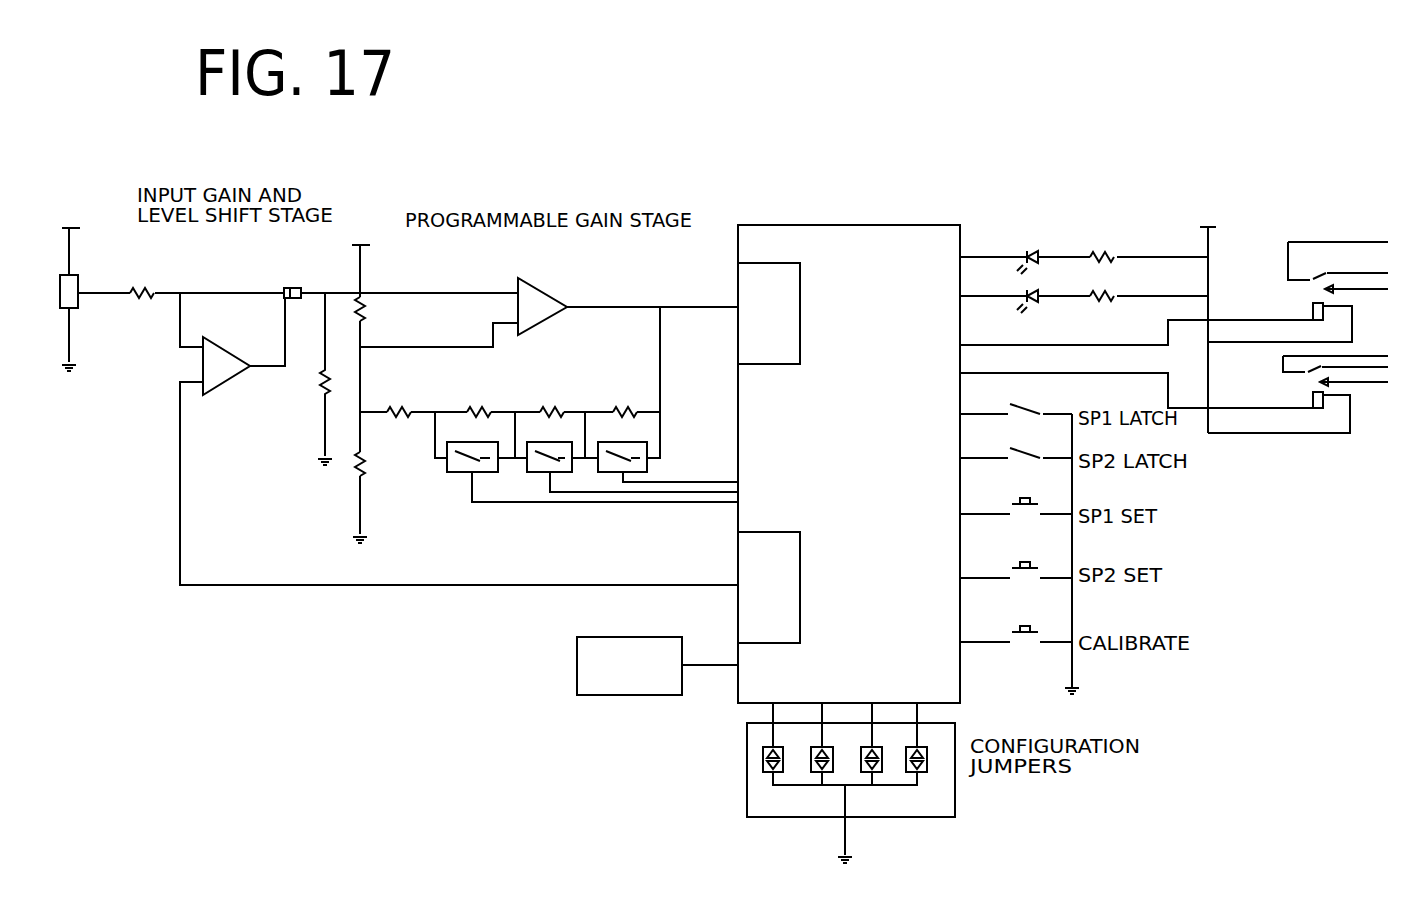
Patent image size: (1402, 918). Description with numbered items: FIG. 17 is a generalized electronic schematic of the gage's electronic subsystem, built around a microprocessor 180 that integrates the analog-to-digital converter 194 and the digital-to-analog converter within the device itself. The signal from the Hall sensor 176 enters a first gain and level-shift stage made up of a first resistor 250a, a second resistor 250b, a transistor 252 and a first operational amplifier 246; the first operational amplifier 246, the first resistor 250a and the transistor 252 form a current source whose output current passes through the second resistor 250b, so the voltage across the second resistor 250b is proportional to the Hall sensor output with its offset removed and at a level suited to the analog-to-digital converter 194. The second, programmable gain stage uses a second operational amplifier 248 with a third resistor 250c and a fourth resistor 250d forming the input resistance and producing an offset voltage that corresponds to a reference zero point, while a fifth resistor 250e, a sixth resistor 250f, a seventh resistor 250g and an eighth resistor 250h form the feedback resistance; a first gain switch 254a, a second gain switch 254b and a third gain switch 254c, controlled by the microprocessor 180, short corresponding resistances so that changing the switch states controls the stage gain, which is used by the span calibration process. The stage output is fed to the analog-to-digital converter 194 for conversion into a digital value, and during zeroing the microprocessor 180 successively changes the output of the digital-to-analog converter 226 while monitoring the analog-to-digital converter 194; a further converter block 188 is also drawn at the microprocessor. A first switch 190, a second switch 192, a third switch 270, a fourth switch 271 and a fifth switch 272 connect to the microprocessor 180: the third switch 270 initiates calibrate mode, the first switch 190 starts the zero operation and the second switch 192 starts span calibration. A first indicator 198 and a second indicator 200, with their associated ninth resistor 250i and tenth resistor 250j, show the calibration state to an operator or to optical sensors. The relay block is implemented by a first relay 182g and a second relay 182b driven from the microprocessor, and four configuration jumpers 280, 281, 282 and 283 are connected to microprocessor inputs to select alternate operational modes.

The Hall sensor 176 is at (78, 290).
The resistor R1 250a is at (150, 283).
The transistor Q1 252 is at (292, 287).
The operational amplifier A1 246 is at (203, 372).
The resistor R2 250b is at (318, 400).
The resistor R3 250c is at (364, 316).
The resistor R4 250d is at (355, 485).
The operational amplifier A2 248 is at (545, 283).
The resistor R5 250e is at (398, 405).
The resistor R6 250f is at (474, 405).
The resistor R7 250g is at (549, 405).
The resistor R8 250h is at (628, 405).
The switch GS1 254a is at (447, 462).
The switch GS2 254b is at (537, 475).
The switch GS3 254c is at (607, 475).
The microprocessor 180 is at (880, 225).
The ADC 194 is at (800, 327).
The digital to analog converter DAC 188 is at (800, 612).
The DAC 226 is at (577, 682).
The indicator LED1 198 is at (1033, 250).
The indicator LED2 200 is at (1042, 331).
The resistor R9 250i is at (1115, 251).
The resistor R10 250j is at (1115, 291).
The relay K1 182g is at (1313, 312).
The relay K2 182b is at (1330, 405).
The switch SW4 271 is at (1045, 422).
The switch SW5 272 is at (1048, 472).
The switch SW1 190 is at (1042, 528).
The switch SW2 192 is at (1045, 590).
The switch SW3 270 is at (1048, 655).
The configuration jumper SJ1 280 is at (765, 770).
The configuration jumper SJ2 281 is at (812, 773).
The configuration jumper SJ3 282 is at (882, 770).
The configuration jumper SJ4 283 is at (927, 768).